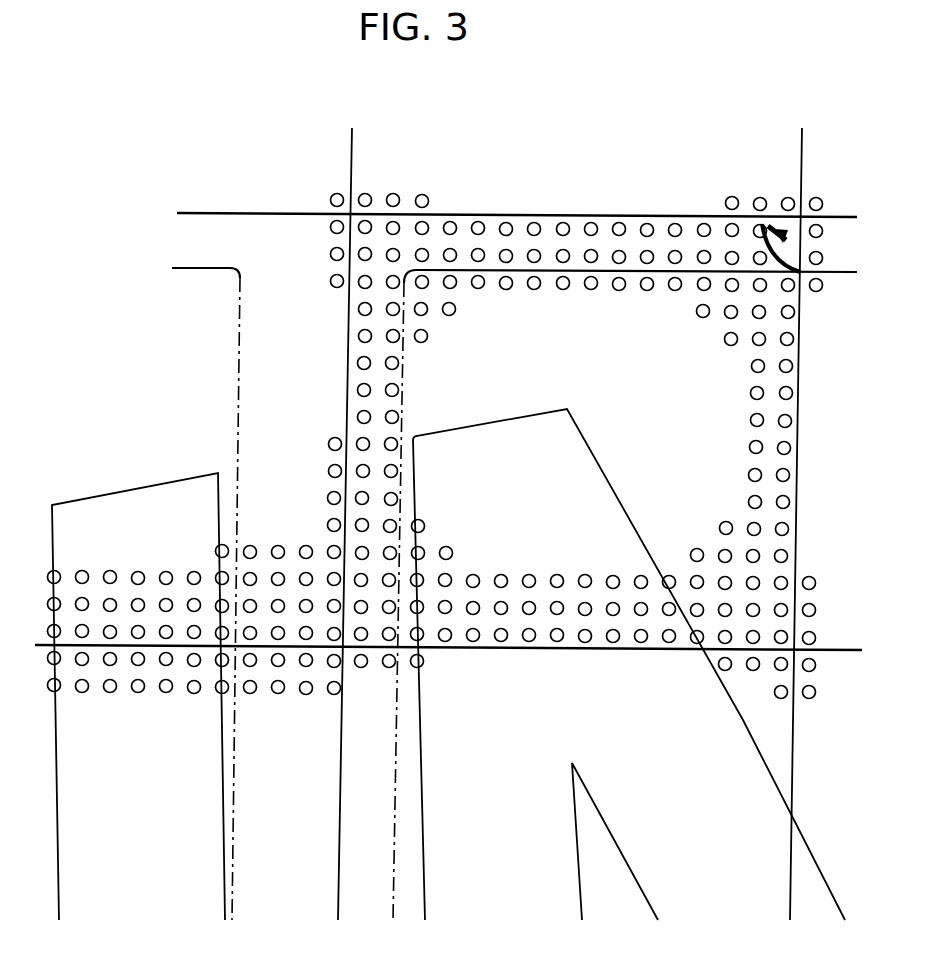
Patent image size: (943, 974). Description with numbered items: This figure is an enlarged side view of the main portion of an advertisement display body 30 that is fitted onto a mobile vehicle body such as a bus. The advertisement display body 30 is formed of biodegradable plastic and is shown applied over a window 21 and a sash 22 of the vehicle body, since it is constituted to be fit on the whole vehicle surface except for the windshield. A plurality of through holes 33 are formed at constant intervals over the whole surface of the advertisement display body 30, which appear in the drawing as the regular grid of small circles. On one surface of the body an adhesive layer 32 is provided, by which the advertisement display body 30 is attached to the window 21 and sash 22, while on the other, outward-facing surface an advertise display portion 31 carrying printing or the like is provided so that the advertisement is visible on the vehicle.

The window 21 is at (525, 317).
The sash 22 is at (240, 370).
The advertisement display body 30 is at (790, 230).
The advertise display portion 31 is at (157, 503).
The adhesive layer 32 is at (783, 230).
The through holes 33 is at (590, 251).